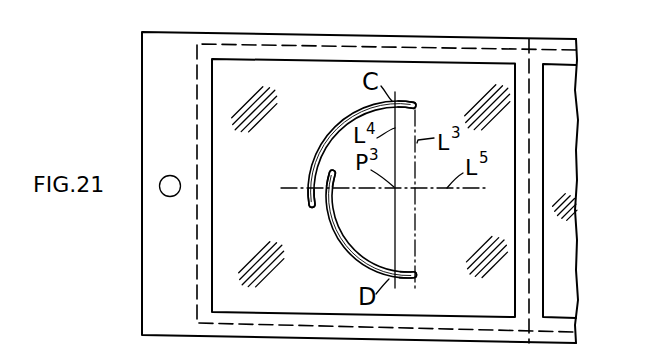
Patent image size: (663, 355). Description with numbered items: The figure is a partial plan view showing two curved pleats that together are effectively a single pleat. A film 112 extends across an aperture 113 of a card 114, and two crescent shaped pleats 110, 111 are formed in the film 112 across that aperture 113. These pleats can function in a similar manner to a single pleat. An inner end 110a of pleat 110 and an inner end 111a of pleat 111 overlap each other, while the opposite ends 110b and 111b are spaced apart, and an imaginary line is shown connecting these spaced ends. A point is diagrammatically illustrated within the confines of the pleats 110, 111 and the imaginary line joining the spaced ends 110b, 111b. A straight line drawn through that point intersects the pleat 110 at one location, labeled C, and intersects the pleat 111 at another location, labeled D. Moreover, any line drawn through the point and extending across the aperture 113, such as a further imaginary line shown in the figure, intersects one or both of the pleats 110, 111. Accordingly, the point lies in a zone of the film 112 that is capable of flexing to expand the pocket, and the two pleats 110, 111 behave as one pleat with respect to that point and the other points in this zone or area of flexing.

The crescent shaped pleat 110 is at (332, 123).
The inner end of pleat 110 110a is at (311, 205).
The opposite end of pleat 110 110b is at (414, 104).
The crescent shaped pleat 111 is at (340, 249).
The inner end of pleat 111 111a is at (323, 169).
The opposite end of pleat 111 111b is at (411, 280).
The film 112 is at (316, 73).
The aperture 113 is at (388, 62).
The card 114 is at (149, 65).